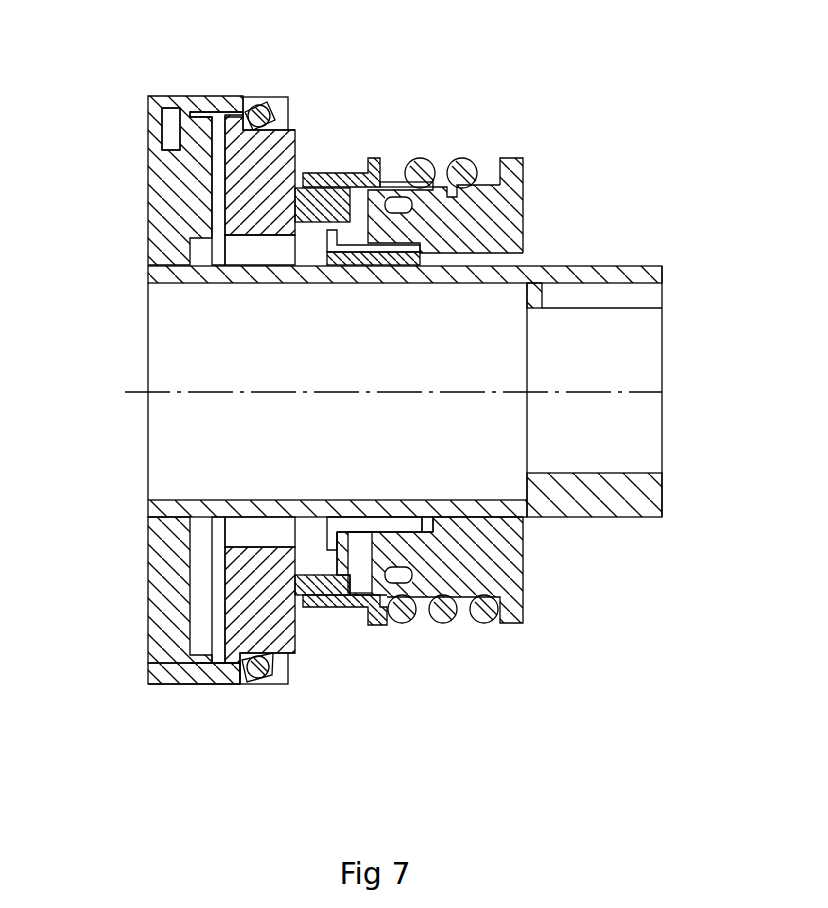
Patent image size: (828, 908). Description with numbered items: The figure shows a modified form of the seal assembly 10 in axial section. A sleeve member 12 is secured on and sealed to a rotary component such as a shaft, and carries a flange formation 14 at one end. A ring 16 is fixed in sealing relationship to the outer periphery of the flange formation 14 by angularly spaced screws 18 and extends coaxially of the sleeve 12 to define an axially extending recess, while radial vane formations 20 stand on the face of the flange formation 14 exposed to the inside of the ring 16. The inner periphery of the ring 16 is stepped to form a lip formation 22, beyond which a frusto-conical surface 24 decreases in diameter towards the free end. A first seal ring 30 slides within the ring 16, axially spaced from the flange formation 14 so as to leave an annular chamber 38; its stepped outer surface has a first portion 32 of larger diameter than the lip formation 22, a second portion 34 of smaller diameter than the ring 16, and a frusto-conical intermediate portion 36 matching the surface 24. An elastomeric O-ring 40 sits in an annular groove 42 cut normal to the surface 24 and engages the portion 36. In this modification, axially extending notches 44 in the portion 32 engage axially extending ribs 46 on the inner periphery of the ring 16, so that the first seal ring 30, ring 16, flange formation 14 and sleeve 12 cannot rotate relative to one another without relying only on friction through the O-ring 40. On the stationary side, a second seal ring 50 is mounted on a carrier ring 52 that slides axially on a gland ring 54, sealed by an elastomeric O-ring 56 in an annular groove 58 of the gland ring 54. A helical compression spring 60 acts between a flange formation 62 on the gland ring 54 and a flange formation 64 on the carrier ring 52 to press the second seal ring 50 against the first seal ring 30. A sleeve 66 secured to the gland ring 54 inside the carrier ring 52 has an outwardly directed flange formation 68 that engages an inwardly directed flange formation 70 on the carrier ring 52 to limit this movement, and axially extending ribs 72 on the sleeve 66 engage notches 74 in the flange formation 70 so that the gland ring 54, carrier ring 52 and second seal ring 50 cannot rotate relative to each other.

The seal assembly 10 is at (567, 596).
The sleeve member 12 is at (592, 272).
The flange formation 14 is at (153, 660).
The ring 16 is at (173, 683).
The screws 18 is at (160, 103).
The radial vane formations 20 is at (200, 175).
The lip formation 22 is at (243, 684).
The frusto-conical surface 24 is at (292, 107).
The first seal ring 30 is at (225, 215).
The first portion 32 is at (230, 623).
The second portion 34 is at (291, 652).
The frusto-conical intermediate portion 36 is at (250, 150).
The annular chamber 38 is at (218, 555).
The elastomeric O-ring 40 is at (268, 107).
The annular groove 42 is at (286, 660).
The axially extending notches 44 is at (232, 673).
The axially extending ribs 46 is at (202, 670).
The second seal ring 50 is at (305, 192).
The carrier ring 52 is at (340, 175).
The gland ring 54 is at (508, 203).
The elastomeric O-ring 56 is at (432, 160).
The annular groove 58 is at (392, 194).
The helical compression spring 60 is at (468, 158).
The flange formation 62 is at (522, 160).
The flange formation 64 is at (381, 184).
The sleeve 66 is at (408, 535).
The outwardly directed flange formation 68 is at (340, 548).
The inwardly directed flange formation 70 is at (380, 625).
The axially extending ribs 72 is at (350, 550).
The notches 74 is at (412, 632).